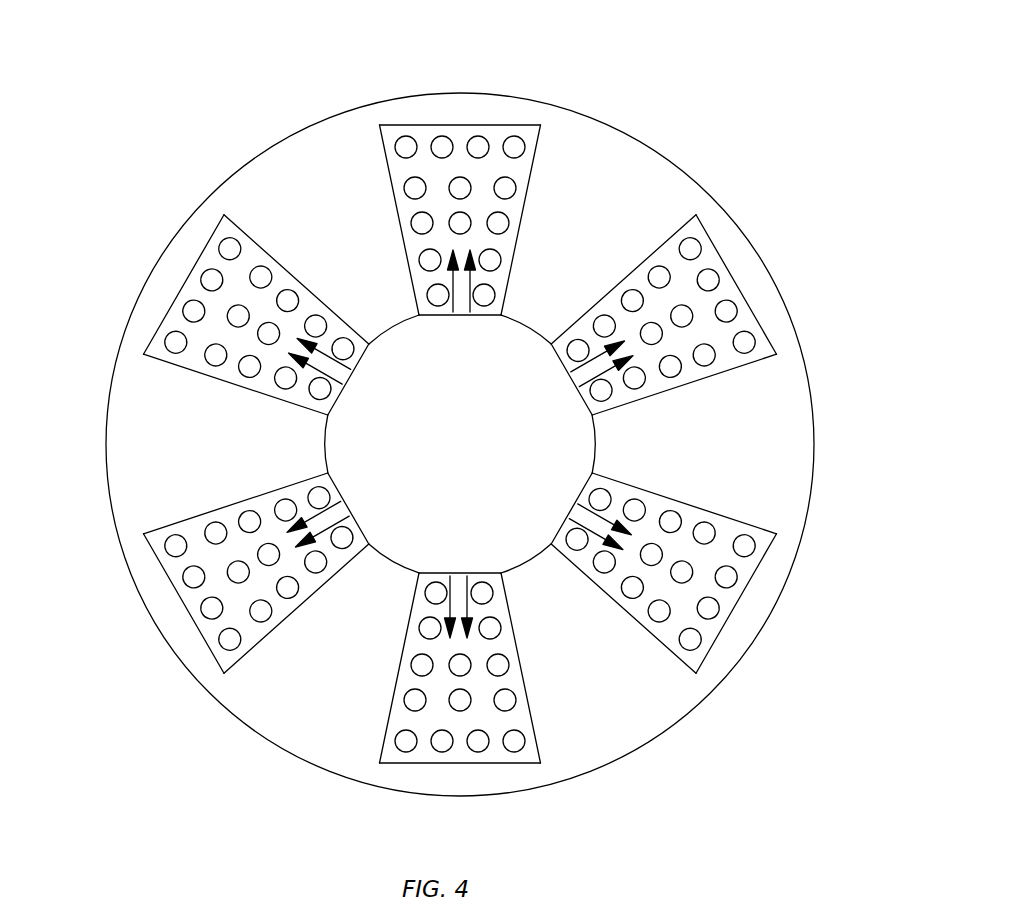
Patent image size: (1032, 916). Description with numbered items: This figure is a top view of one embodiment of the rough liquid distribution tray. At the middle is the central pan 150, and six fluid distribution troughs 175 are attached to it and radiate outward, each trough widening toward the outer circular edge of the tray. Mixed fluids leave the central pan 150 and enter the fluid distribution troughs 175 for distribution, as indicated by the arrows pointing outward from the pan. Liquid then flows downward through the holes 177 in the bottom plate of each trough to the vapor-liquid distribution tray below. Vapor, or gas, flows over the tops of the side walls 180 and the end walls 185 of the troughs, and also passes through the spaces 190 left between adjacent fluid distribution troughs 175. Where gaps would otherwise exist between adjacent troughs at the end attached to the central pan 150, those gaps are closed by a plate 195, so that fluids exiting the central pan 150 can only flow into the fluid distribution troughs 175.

The central pan 150 is at (460, 444).
The fluid distribution troughs 175 is at (423, 138).
The holes 177 is at (750, 346).
The side walls 180 is at (380, 141).
The end walls 185 is at (452, 127).
The spaces 190 is at (367, 236).
The plate 195 is at (402, 322).